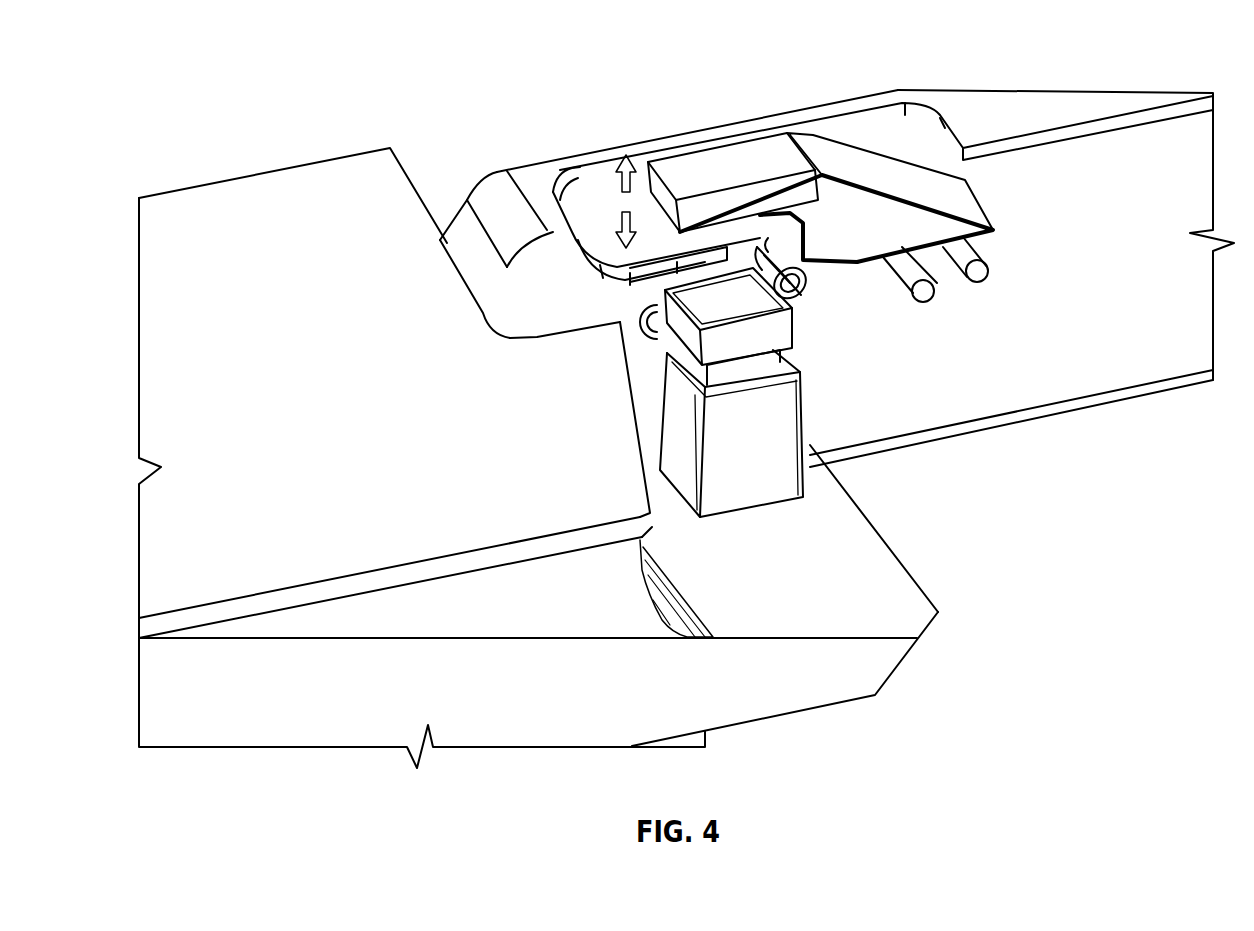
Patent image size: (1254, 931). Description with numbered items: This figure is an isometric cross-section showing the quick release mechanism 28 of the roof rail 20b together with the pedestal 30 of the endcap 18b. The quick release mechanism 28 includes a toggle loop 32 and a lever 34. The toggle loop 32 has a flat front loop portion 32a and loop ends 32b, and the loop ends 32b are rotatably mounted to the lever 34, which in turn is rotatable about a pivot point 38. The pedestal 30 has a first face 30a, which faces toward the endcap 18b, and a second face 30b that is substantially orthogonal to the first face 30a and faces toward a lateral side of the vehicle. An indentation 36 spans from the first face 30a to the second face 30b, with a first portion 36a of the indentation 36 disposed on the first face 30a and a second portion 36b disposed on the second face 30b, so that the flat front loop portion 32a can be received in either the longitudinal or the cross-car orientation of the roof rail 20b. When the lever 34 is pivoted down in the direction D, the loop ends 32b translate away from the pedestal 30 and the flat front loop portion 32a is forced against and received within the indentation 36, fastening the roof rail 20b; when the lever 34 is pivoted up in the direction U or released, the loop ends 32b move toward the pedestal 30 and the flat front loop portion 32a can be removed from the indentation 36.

The endcap 18b is at (237, 176).
The roof rail 20b is at (985, 100).
The quick release mechanism 28 is at (528, 116).
The lever 34 is at (712, 160).
The toggle loop 32 is at (716, 314).
The flat front loop portion 32a is at (660, 340).
The loop ends 32b is at (805, 300).
The indentation 36 is at (726, 352).
The first portion of the indentation 36a is at (668, 355).
The second portion of the indentation 36b is at (745, 363).
The pedestal 30 is at (723, 443).
The first face 30a is at (675, 430).
The second face 30b is at (753, 480).
The pivot point 38 is at (980, 271).